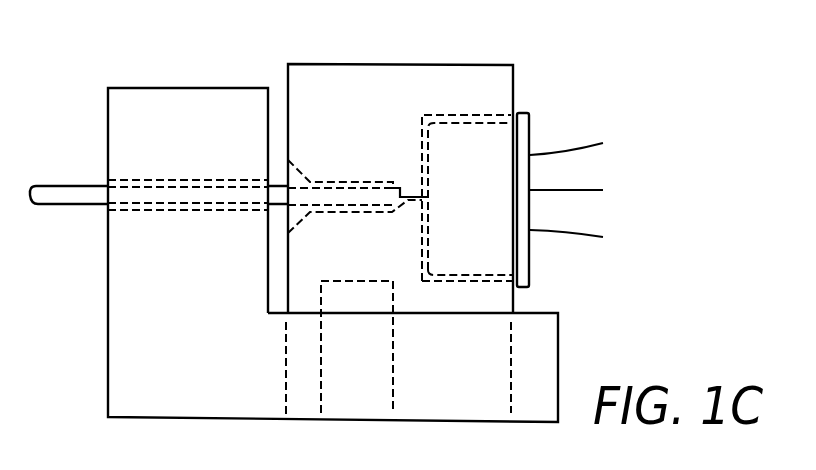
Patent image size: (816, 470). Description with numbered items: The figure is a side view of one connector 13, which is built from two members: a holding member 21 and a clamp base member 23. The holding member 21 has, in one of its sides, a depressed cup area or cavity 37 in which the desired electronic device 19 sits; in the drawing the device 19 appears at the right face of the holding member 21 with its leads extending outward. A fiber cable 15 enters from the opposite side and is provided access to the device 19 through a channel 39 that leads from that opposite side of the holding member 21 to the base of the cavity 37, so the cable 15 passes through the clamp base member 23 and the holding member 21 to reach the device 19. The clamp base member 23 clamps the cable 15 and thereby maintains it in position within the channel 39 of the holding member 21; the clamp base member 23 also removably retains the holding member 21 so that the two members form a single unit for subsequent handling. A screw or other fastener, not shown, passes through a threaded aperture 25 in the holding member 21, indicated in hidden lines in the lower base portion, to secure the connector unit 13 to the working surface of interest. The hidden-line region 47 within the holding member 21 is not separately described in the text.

The drive assembly 13 is at (108, 52).
The shaft 15 is at (62, 206).
The electrical connector plate 19 is at (530, 135).
The motor housing 21 is at (346, 100).
The gear housing 23 is at (179, 136).
The base mounting element 25 is at (355, 390).
The bottom wall of rotor cavity 37 is at (455, 282).
The coupling 39 is at (346, 182).
The rotor cavity 47 is at (412, 195).